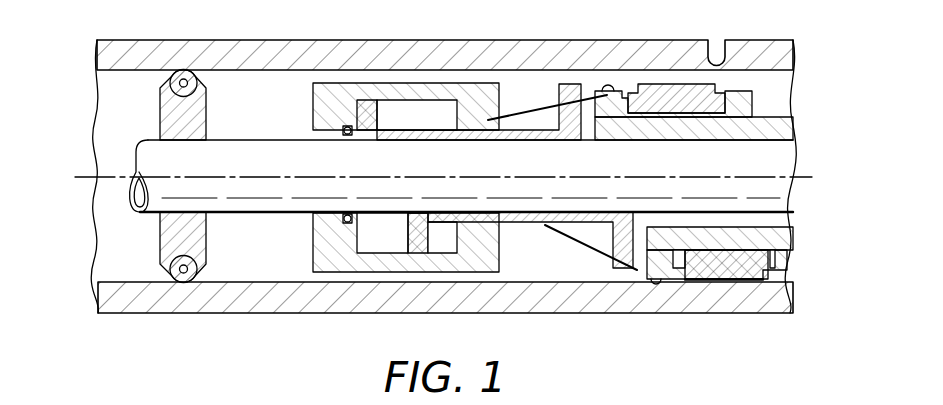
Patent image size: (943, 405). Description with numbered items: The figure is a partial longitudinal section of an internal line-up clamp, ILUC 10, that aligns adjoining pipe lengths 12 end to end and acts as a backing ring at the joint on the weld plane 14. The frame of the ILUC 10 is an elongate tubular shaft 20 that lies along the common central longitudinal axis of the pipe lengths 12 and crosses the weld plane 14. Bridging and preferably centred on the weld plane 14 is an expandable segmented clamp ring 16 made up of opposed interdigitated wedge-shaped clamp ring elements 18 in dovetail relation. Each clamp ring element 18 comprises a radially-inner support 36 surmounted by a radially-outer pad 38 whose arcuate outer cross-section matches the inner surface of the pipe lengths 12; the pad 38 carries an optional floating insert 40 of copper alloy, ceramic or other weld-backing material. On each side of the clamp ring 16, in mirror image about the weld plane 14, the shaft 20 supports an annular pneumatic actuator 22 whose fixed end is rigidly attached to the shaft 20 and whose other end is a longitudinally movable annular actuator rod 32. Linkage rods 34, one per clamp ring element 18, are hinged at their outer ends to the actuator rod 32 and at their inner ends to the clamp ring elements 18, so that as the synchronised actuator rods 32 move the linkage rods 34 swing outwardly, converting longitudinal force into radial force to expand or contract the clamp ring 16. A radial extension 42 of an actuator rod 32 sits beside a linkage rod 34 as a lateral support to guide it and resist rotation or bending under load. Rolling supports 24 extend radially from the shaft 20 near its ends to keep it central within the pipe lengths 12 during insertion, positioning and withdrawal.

The ILUC 10 is at (101, 133).
The pipe lengths 12 is at (754, 48).
The weld plane 14 is at (712, 265).
The clamp ring 16 is at (666, 71).
The clamp ring elements 18 is at (626, 80).
The shaft 20 is at (251, 140).
The actuators 22 is at (330, 88).
The rolling supports 24 is at (204, 235).
The actuator rod 32 is at (412, 130).
The linkage rods 34 is at (529, 112).
The radially-inner support 36 is at (776, 128).
The radially-outer pad 38 is at (772, 101).
The floating insert 40 is at (672, 105).
The radial extension 42 is at (619, 222).